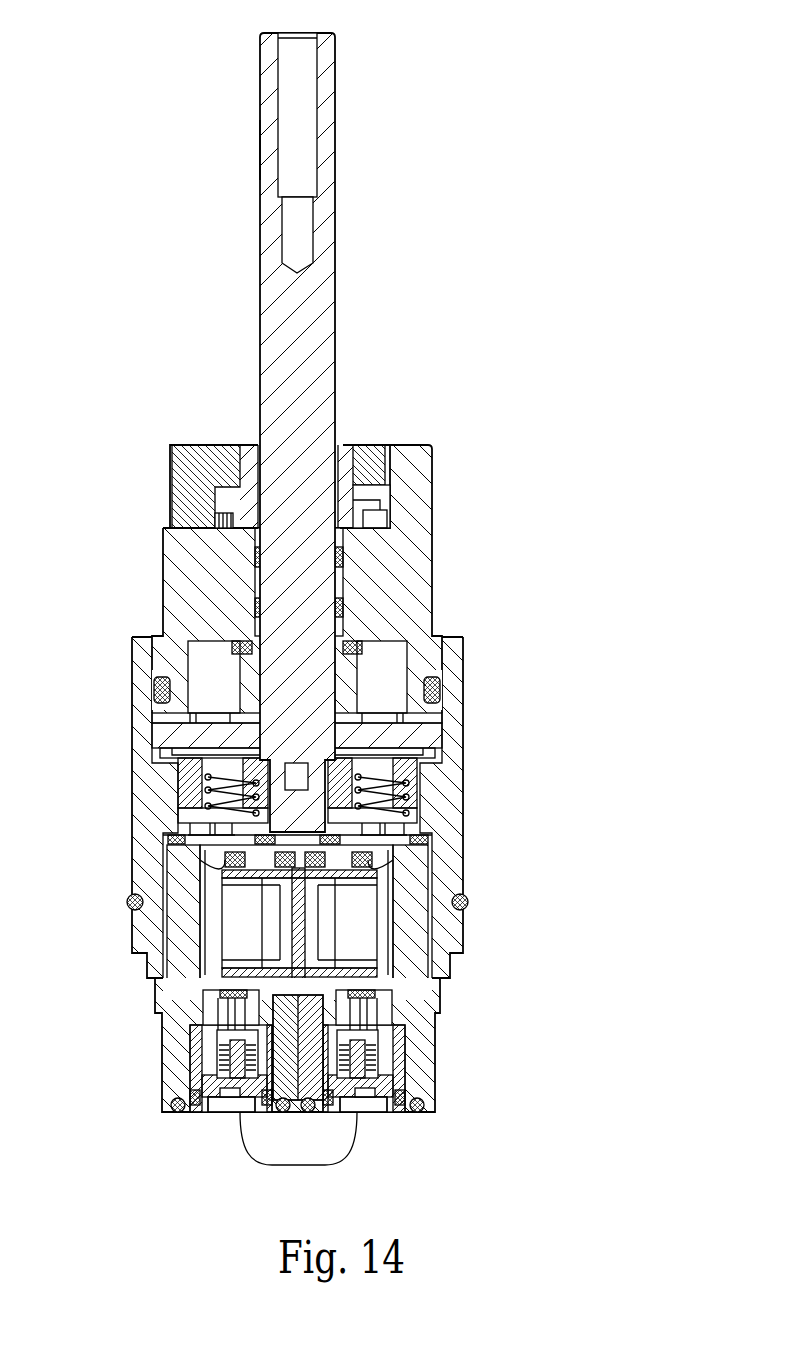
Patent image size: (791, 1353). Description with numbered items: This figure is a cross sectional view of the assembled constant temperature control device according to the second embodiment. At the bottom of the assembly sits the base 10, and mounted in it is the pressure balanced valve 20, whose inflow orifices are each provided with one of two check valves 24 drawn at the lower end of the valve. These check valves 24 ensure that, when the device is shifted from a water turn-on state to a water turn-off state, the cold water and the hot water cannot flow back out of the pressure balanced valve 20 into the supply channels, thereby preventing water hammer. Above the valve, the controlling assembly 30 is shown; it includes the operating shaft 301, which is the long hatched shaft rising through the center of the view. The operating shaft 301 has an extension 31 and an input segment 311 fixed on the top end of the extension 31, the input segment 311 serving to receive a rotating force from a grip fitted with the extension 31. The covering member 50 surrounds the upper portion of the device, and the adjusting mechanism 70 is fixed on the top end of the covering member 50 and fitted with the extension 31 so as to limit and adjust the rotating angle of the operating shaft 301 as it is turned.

The base 10 is at (473, 665).
The pressure balanced valve 20 is at (443, 1070).
The check valves 24 is at (225, 1105).
The controlling assembly 30 is at (343, 163).
The extension 31 is at (270, 232).
The operating shaft 301 is at (260, 146).
The input segment 311 is at (325, 33).
The covering member 50 is at (441, 522).
The adjusting mechanism 70 is at (162, 490).